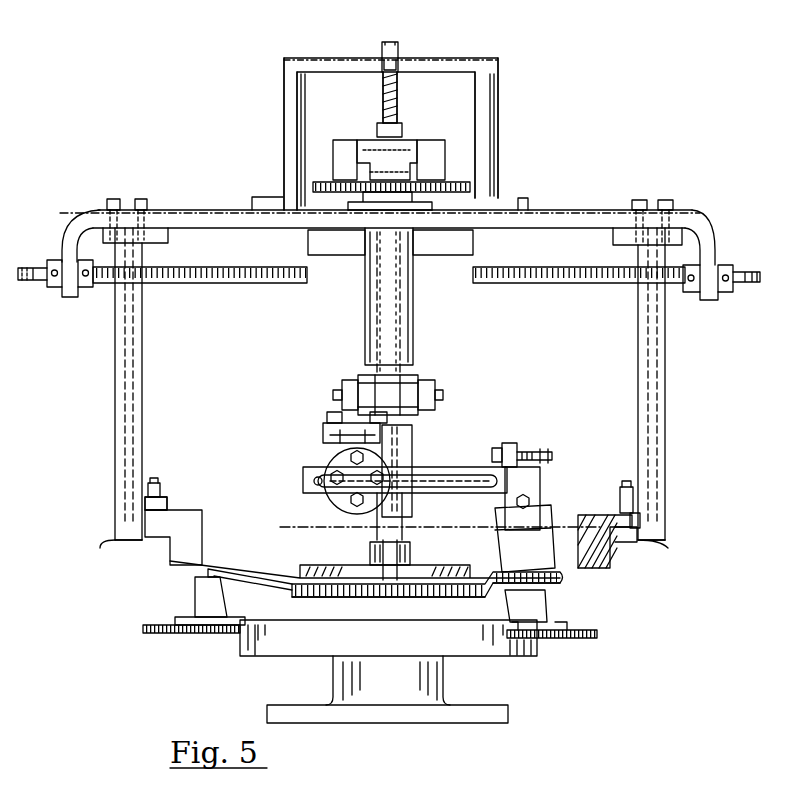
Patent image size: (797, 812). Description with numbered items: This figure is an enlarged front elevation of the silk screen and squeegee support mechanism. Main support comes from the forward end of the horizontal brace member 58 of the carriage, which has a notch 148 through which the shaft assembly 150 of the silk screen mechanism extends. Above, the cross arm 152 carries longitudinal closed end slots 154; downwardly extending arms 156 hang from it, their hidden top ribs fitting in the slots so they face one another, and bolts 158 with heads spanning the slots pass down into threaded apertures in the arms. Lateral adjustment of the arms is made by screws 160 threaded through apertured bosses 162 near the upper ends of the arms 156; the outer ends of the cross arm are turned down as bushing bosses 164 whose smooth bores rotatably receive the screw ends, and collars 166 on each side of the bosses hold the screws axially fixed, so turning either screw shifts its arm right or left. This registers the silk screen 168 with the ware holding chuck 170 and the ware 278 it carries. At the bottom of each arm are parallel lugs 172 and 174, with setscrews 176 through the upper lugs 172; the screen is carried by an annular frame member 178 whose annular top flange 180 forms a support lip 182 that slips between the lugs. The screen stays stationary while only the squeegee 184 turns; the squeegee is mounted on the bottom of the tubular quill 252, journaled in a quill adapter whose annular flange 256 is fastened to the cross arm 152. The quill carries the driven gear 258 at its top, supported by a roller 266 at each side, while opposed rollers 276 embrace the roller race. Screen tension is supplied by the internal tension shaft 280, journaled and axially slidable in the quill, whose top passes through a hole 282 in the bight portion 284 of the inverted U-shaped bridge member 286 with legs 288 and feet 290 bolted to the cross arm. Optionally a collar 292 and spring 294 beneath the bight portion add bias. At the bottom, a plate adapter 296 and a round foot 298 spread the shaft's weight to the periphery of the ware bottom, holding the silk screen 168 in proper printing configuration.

The horizontal brace member 58 is at (475, 245).
The notch 148 is at (413, 250).
The shaft assembly 150 is at (417, 308).
The cross arm 152 is at (597, 207).
The closed end slots 154 is at (618, 207).
The downwardly extending arms 156 is at (115, 351).
The bolts 158 is at (143, 198).
The screws 160 is at (252, 284).
The apertured bosses 162 is at (125, 293).
The bushing bosses 164 is at (68, 298).
The collars 166 is at (86, 262).
The silk screen 168 is at (255, 566).
The ware holding chuck 170 is at (188, 598).
The upper lugs 172 is at (160, 497).
The lower lugs 174 is at (140, 541).
The setscrews 176 is at (155, 483).
The annular frame member 178 is at (610, 558).
The annular top flange 180 is at (178, 511).
The support lip 182 is at (146, 504).
The squeegee 184 is at (545, 500).
The tubular quill 252 is at (405, 420).
The annular flange 256 is at (432, 206).
The driven gear 258 is at (455, 186).
The rollers 266 is at (357, 173).
The opposed rollers 276 is at (360, 378).
The ware 278 is at (560, 588).
The tension shaft 280 is at (394, 44).
The hole 282 is at (385, 62).
The bight portion 284 is at (448, 58).
The bridge member 286 is at (381, 50).
The legs 288 is at (284, 92).
The feet 290 is at (262, 198).
The collar 292 is at (378, 127).
The spring 294 is at (383, 90).
The plate adapter 296 is at (408, 549).
The foot 298 is at (327, 563).